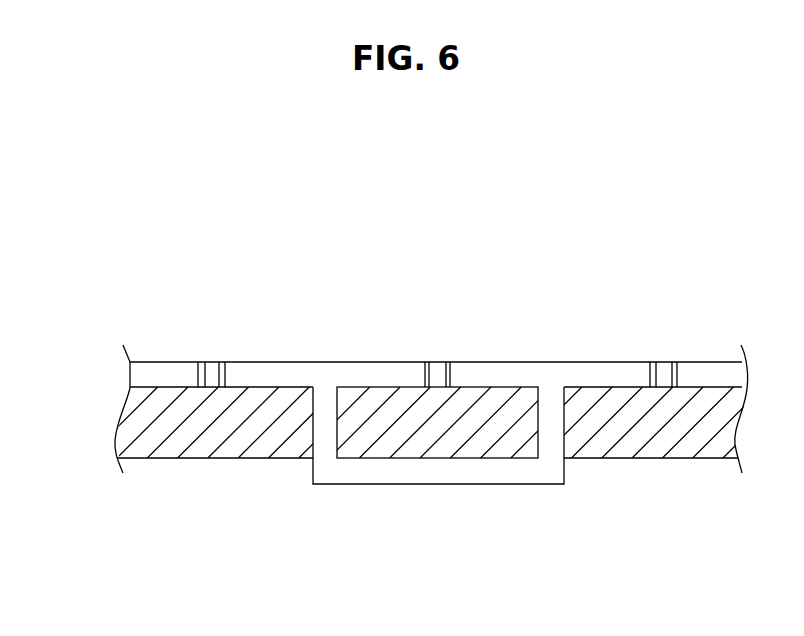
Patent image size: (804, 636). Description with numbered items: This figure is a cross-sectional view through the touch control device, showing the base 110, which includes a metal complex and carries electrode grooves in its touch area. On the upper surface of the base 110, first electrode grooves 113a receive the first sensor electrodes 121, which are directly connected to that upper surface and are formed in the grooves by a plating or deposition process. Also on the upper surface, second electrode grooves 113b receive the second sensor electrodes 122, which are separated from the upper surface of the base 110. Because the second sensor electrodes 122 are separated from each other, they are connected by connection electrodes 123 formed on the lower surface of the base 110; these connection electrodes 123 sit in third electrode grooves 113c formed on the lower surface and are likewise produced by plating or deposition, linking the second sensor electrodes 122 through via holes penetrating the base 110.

The base 110 is at (638, 252).
The first electrode grooves 113a is at (222, 375).
The second electrode grooves 113b is at (155, 390).
The third electrode grooves 113c is at (415, 458).
The first sensor electrodes 121 is at (438, 362).
The second sensor electrodes 122 is at (705, 373).
The connection electrodes 123 is at (487, 478).